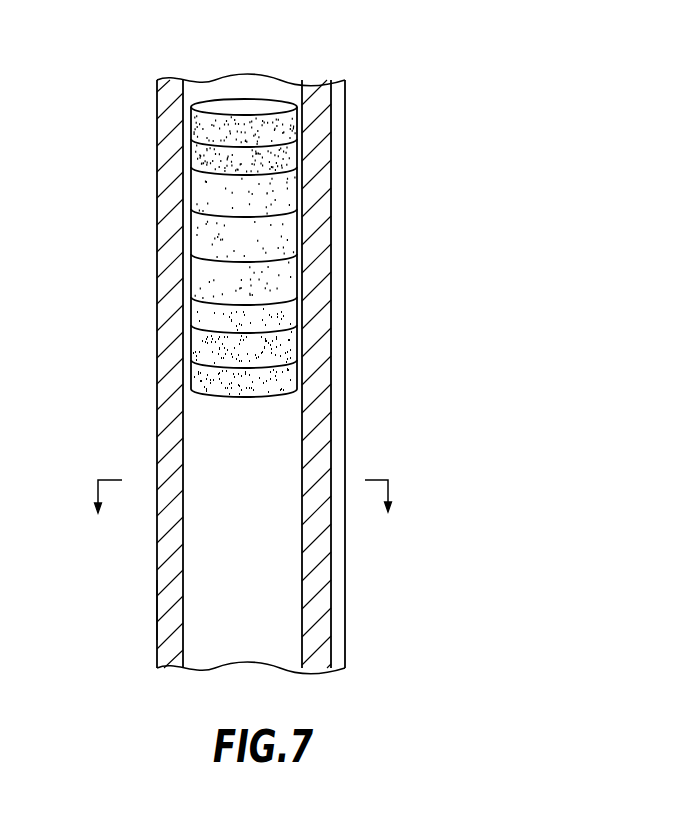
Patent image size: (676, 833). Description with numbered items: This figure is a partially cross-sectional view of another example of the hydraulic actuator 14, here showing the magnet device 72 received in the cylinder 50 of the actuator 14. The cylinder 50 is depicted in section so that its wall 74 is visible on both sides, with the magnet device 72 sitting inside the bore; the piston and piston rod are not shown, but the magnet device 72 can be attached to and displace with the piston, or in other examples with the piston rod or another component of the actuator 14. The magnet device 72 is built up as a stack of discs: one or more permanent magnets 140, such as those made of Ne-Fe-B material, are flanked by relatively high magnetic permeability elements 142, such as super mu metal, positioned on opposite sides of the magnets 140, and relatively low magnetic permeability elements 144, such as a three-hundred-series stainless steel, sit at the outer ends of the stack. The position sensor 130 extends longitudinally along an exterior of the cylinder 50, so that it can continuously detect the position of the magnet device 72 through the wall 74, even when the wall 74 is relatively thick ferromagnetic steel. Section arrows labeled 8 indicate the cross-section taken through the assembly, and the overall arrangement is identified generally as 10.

The downhole tool assembly 10 is at (444, 128).
The actuator 14 is at (150, 420).
The position sensor 130 is at (347, 353).
The magnet device 72 is at (268, 95).
The relatively low magnetic permeability elements 144 is at (191, 122).
The relatively high magnetic permeability elements 142 is at (191, 155).
The permanent magnets 140 is at (191, 186).
The wall 74 is at (167, 594).
The cylinder 50 is at (155, 623).
The section line 8- 8 is at (243, 513).